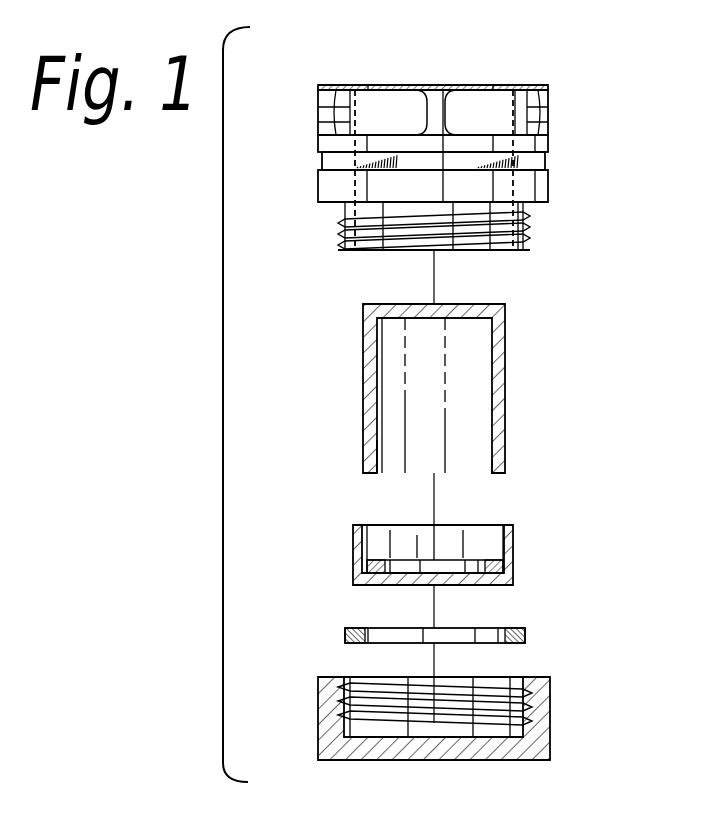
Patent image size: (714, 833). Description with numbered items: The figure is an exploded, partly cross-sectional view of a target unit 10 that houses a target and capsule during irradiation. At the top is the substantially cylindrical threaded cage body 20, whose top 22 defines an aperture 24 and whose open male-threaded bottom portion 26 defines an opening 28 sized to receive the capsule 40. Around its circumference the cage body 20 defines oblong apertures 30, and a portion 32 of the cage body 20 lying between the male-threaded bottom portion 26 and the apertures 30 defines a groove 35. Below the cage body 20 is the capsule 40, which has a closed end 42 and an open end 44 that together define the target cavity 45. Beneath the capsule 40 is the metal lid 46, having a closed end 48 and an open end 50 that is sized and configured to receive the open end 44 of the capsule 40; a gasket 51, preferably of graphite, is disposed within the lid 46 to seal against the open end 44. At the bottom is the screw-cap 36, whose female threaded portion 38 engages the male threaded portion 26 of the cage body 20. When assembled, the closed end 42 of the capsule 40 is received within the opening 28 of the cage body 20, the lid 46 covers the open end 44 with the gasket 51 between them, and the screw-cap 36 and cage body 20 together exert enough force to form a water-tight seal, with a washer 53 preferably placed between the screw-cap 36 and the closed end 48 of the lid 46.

The target unit 10 is at (216, 380).
The threaded cage body 20 is at (558, 105).
The top 22 is at (372, 85).
The aperture 24 is at (478, 85).
The male-threaded bottom portion 26 is at (345, 238).
The opening 28 is at (503, 258).
The circumferential oblong apertures 30 is at (452, 109).
The portion 32 is at (549, 185).
The groove 35 is at (549, 155).
The screw-cap 36 is at (550, 713).
The female threaded portion 38 is at (522, 688).
The capsule 40 is at (505, 430).
The closed end 42 is at (490, 305).
The open end 44 is at (497, 473).
The target cavity 45 is at (385, 460).
The metal lid 46 is at (513, 548).
The closed end 48 is at (370, 585).
The open end 50 is at (513, 525).
The gasket 51 is at (365, 567).
The washer 53 is at (527, 630).